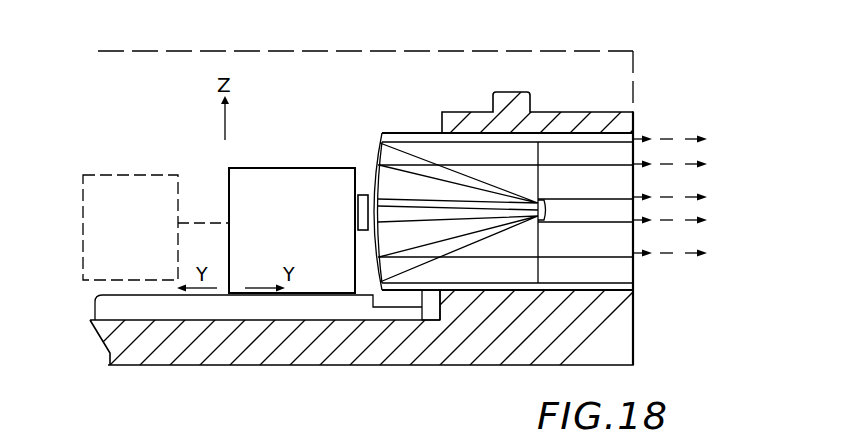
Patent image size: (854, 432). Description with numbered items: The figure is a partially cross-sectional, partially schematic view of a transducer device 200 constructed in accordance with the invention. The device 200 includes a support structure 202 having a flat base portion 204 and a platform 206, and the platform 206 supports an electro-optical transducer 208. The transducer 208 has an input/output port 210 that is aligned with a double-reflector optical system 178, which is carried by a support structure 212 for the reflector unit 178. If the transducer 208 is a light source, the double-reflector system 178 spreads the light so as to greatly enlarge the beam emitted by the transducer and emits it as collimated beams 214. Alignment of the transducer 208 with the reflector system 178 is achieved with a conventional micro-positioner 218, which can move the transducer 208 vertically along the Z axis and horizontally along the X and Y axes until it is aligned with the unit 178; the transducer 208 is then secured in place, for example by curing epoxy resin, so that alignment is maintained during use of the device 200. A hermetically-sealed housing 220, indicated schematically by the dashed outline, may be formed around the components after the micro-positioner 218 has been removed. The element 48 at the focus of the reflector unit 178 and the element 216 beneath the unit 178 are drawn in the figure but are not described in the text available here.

The optical fiber end / point source 48 is at (547, 216).
The double-reflector optical system 178 is at (407, 121).
The transducer device 200 is at (730, 57).
The support structure 202 is at (635, 318).
The flat base portion 204 is at (306, 366).
The platform 206 is at (91, 316).
The electro-optical transducer 208 is at (321, 245).
The input/output port 210 is at (363, 194).
The support structure for the reflector unit 212 is at (548, 112).
The collimated beams 214 is at (670, 162).
The spacer 216 is at (420, 300).
The micro-positioner 218 is at (153, 262).
The hermetically-sealed housing 220 is at (291, 50).